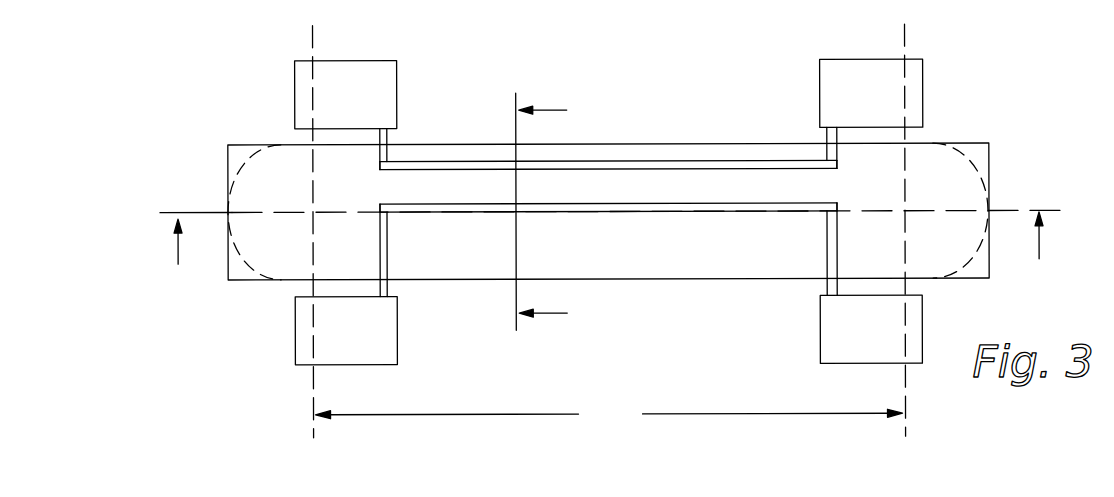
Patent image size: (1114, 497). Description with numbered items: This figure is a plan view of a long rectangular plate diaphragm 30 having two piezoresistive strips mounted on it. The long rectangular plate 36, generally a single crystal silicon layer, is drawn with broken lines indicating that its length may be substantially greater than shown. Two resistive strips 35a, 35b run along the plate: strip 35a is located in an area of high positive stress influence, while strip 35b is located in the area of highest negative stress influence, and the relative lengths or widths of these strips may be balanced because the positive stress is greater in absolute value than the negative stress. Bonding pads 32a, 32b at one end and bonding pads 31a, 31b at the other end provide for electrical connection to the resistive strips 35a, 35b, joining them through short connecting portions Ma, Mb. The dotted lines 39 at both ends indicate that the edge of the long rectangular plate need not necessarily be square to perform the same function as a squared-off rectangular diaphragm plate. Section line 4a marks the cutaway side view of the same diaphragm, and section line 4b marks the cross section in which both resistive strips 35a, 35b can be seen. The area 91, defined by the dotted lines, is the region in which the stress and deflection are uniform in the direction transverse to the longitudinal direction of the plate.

The flow conduit assembly 30 is at (248, 112).
The long rectangular plate 36 is at (293, 247).
The dotted lines 39 is at (968, 159).
The resistive strip 35a is at (474, 161).
The resistive strip 35b is at (432, 213).
The bonding pad 32a is at (380, 102).
The bonding pad 32b is at (378, 338).
The bonding pad 31a is at (897, 102).
The bonding pad 31b is at (893, 337).
The upper connector stub Ma is at (391, 133).
The lower connector stub Mb is at (392, 289).
The section line 4a is at (609, 255).
The section line 4b is at (561, 211).
The area 91 is at (608, 414).